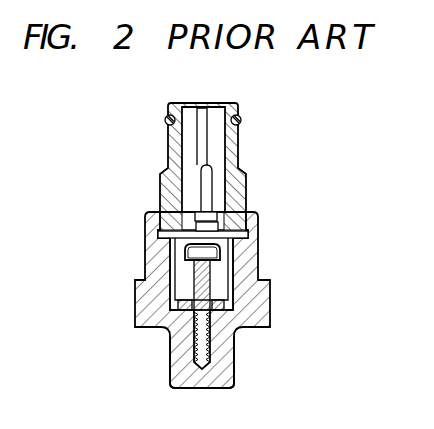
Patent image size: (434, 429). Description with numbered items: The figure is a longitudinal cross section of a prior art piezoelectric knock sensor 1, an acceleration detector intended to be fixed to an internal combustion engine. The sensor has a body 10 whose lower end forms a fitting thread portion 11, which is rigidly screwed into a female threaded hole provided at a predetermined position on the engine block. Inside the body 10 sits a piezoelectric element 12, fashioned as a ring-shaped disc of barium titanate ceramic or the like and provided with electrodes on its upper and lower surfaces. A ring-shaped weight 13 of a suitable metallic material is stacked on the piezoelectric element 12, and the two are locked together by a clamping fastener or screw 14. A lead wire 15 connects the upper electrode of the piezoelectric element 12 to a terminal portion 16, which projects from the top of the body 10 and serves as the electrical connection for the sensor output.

The knock sensor 1 is at (123, 178).
The body 10 is at (228, 300).
The fitting thread portion 11 is at (236, 358).
The piezoelectric element 12 is at (172, 303).
The weight 13 is at (186, 256).
The clamping fastener or screw 14 is at (180, 303).
The lead wire 15 is at (256, 259).
The terminal portion 16 is at (254, 142).